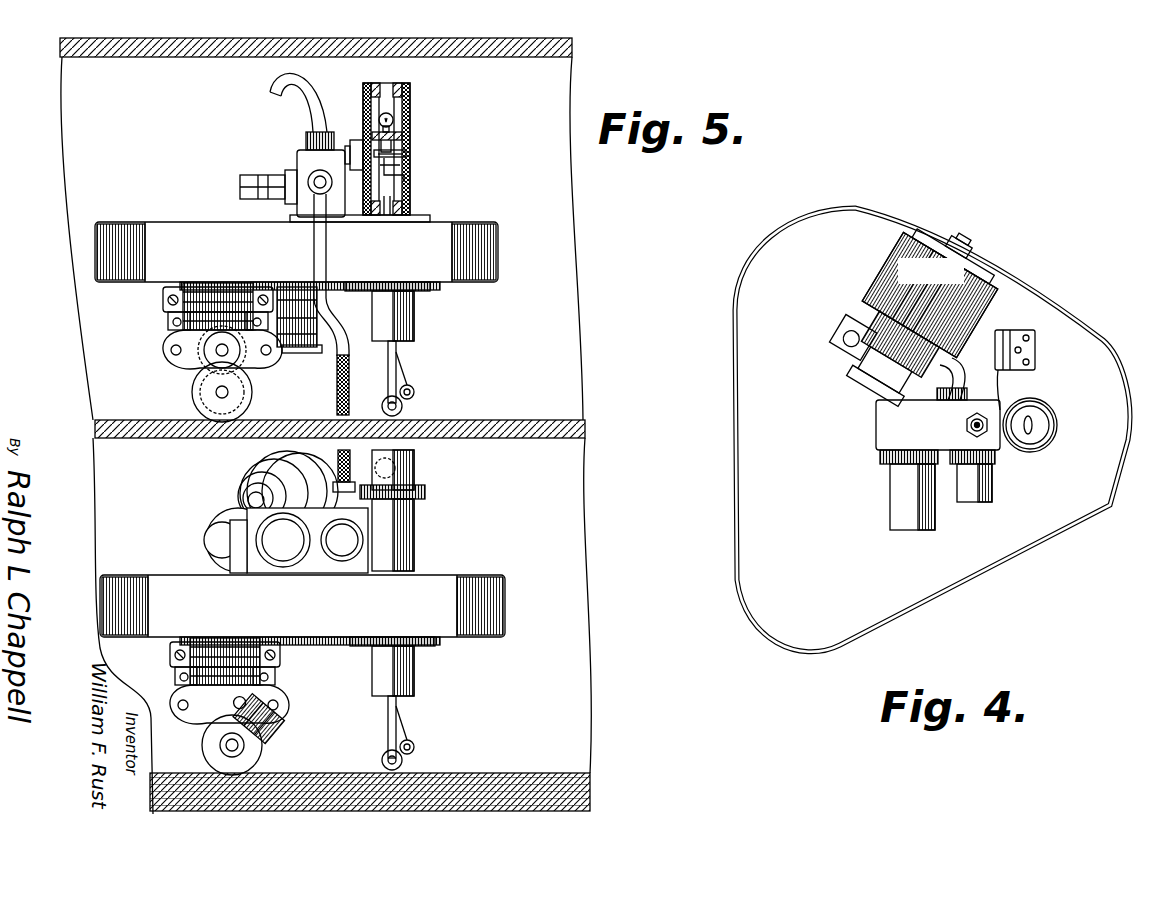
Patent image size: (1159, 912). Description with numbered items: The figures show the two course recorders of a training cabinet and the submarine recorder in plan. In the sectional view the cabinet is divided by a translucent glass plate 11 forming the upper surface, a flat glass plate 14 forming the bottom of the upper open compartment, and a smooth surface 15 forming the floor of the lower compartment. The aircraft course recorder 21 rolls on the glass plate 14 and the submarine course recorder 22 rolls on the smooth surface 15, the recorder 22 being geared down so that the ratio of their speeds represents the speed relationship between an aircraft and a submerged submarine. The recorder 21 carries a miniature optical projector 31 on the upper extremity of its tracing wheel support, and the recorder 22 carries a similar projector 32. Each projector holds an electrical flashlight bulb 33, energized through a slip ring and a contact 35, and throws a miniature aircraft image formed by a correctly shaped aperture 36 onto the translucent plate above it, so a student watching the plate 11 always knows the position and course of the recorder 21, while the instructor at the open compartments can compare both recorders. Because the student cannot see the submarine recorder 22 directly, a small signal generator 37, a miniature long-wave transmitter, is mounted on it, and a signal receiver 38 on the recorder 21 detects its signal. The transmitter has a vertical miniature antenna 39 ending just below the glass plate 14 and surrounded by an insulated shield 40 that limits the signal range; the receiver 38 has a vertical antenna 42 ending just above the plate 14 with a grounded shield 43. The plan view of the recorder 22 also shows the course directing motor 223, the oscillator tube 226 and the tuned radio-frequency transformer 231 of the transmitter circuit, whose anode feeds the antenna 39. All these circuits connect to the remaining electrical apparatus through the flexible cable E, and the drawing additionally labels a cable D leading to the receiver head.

In FIG. 5, the translucent glass plate 11 is at (486, 57).
In FIG. 5, the flat glass plate 14 is at (500, 420).
In FIG. 5, the smooth surface 15 is at (488, 773).
In FIG. 5, the course recorder 21 is at (250, 259).
In FIG. 5, the course recorder 22 is at (300, 612).
In FIG. 4, the course recorder 22 is at (818, 500).
In FIG. 5, the miniature optical projector 31 is at (405, 128).
In FIG. 5, the projector 32 is at (411, 510).
In FIG. 4, the projector 32 is at (1052, 411).
In FIG. 5, the electrical flashlight bulb 33 is at (392, 122).
In FIG. 5, the contact 35 is at (404, 170).
In FIG. 5, the aperture 36 is at (395, 135).
In FIG. 4, the aperture 36 is at (1067, 458).
In FIG. 5, the signal generator 37 is at (263, 540).
In FIG. 4, the signal generator 37 is at (912, 437).
In FIG. 5, the signal receiver 38 is at (304, 163).
In FIG. 5, the miniature antenna 39 is at (340, 451).
In FIG. 4, the miniature antenna 39 is at (964, 423).
In FIG. 5, the insulated shield 40 is at (336, 466).
In FIG. 4, the insulated shield 40 is at (970, 432).
In FIG. 5, the vertical antenna 42 is at (337, 390).
In FIG. 5, the grounded shield 43 is at (340, 344).
In FIG. 5, the course directing motor 223 is at (236, 483).
In FIG. 4, the course directing motor 223 is at (938, 280).
In FIG. 5, the oscillator tube 226 is at (342, 540).
In FIG. 4, the oscillator tube 226 is at (992, 488).
In FIG. 5, the tuned radio-frequency transformer 231 is at (283, 540).
In FIG. 4, the tuned radio-frequency transformer 231 is at (935, 512).
In FIG. 5, the light conductor cable D is at (273, 88).
In FIG. 4, the flexible cable E is at (956, 354).